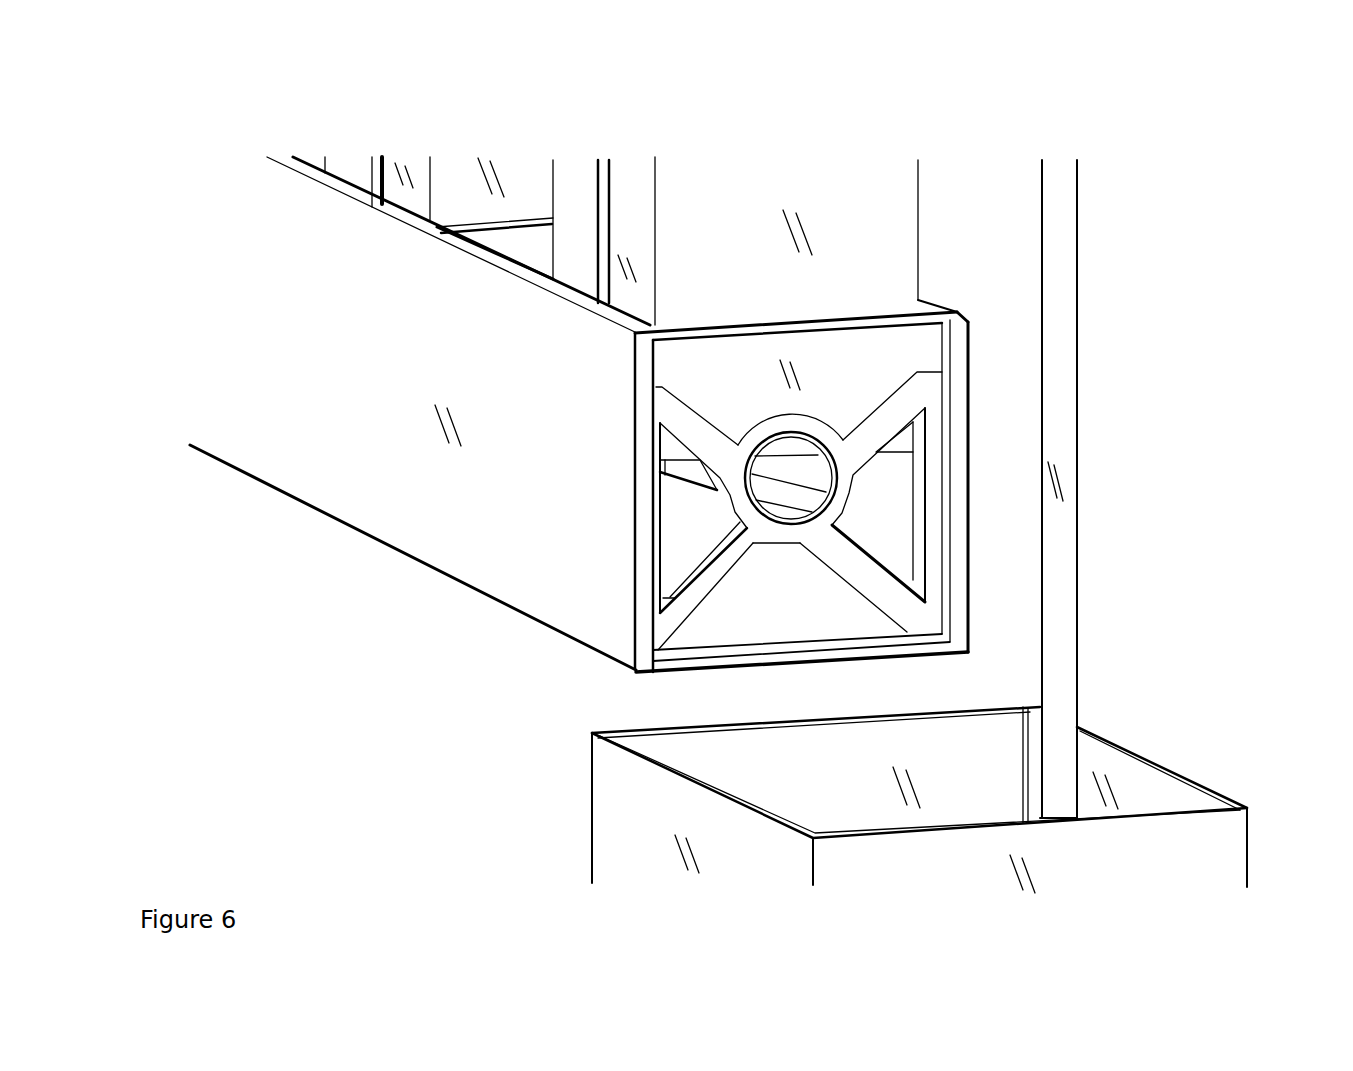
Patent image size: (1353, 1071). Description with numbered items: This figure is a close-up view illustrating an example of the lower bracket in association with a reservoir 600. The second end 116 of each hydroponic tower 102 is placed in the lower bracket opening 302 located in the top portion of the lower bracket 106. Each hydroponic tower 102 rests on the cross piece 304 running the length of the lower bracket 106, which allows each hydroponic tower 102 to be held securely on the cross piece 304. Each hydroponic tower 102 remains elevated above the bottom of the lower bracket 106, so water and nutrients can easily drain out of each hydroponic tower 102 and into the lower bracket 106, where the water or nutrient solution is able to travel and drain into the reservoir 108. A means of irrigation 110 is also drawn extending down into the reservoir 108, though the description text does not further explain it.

The lower bracket in association with a reservoir 600 is at (1198, 165).
The hydroponic tower 102 is at (698, 223).
The lower bracket opening 302 is at (525, 256).
The second end 116 is at (870, 384).
The cross piece 304 is at (737, 490).
The means of irrigation 110 is at (1070, 560).
The lower bracket 106 is at (468, 548).
The reservoir 108 is at (1163, 800).